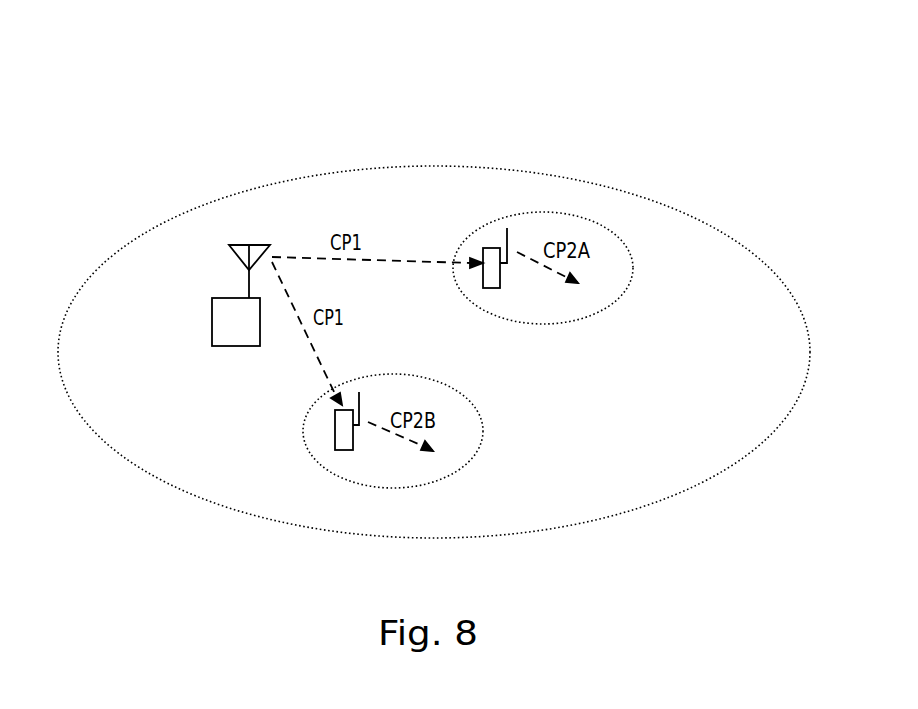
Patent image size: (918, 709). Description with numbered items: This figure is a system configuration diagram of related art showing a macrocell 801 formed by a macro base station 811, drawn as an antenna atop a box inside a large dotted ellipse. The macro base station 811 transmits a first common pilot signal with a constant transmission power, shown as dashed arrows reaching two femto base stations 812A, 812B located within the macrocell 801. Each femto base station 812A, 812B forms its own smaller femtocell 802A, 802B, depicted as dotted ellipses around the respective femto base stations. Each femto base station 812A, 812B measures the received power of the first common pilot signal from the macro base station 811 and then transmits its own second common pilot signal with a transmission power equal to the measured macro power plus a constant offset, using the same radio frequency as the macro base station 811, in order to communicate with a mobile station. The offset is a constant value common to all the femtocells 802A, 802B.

The macrocell 801 is at (432, 166).
The macro base station 811 is at (212, 306).
The femto base station 812A is at (492, 248).
The femto base station 812B is at (335, 430).
The femtocell 802A is at (633, 278).
The femtocell 802B is at (483, 440).